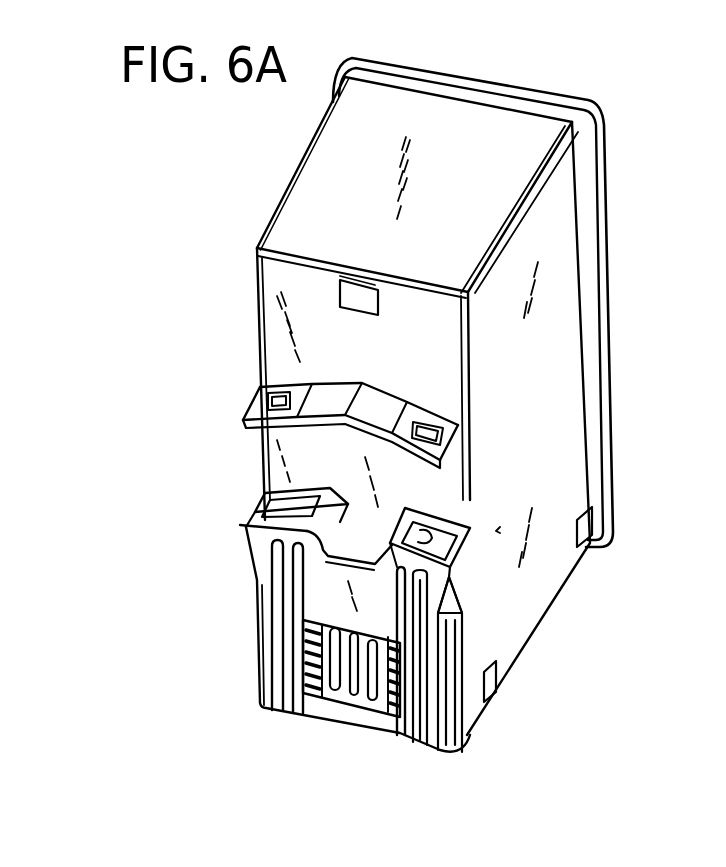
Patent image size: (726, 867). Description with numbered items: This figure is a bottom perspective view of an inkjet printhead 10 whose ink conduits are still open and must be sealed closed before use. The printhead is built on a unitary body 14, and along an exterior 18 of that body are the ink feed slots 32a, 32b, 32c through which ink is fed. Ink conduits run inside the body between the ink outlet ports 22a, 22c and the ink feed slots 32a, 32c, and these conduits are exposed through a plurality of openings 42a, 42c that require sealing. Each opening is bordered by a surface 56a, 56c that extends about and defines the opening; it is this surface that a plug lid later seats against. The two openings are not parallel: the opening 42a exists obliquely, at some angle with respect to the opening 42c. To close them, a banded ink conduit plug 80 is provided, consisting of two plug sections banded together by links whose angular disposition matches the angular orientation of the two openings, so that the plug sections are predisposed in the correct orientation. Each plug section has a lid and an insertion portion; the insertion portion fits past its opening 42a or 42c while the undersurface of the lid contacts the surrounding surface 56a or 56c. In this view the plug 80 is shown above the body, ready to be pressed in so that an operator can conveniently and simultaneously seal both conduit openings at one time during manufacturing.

The inkjet printhead 10 is at (633, 147).
The unitary body 14 is at (607, 303).
The exterior 18 is at (560, 387).
The banded ink conduit plug 80 is at (328, 393).
The ink outlet port 22a is at (303, 510).
The ink outlet port 22c is at (423, 530).
The opening 42a is at (265, 481).
The opening 42c is at (460, 513).
The surface 56a is at (263, 525).
The surface 56c is at (450, 563).
The ink feed slot 32a is at (330, 690).
The ink feed slot 32b is at (347, 697).
The ink feed slot 32c is at (363, 703).